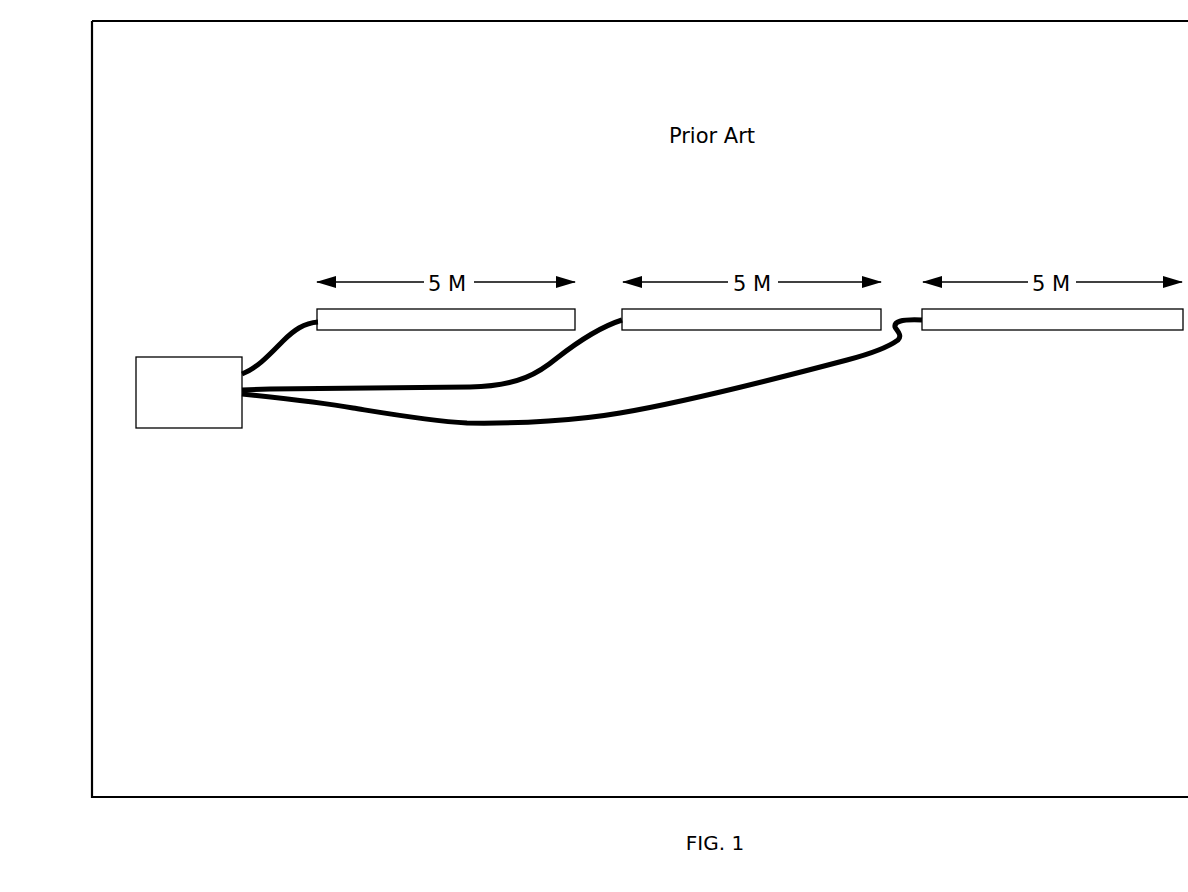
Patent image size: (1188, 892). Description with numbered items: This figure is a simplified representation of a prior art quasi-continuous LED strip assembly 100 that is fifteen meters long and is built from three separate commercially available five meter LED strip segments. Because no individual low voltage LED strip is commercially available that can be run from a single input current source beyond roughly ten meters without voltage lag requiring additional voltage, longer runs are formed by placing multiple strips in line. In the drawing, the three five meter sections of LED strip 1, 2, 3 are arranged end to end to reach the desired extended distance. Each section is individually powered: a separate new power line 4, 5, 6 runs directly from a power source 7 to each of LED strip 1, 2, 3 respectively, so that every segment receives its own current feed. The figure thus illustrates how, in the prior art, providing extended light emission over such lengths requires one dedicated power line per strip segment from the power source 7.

The LED strip 1 is at (389, 332).
The LED strip 2 is at (697, 332).
The LED strip 3 is at (1096, 331).
The power line 4 is at (272, 336).
The power line 5 is at (472, 384).
The power line 6 is at (538, 421).
The power source 7 is at (192, 435).
The quasi-continuous LED strip assembly 100 is at (977, 472).